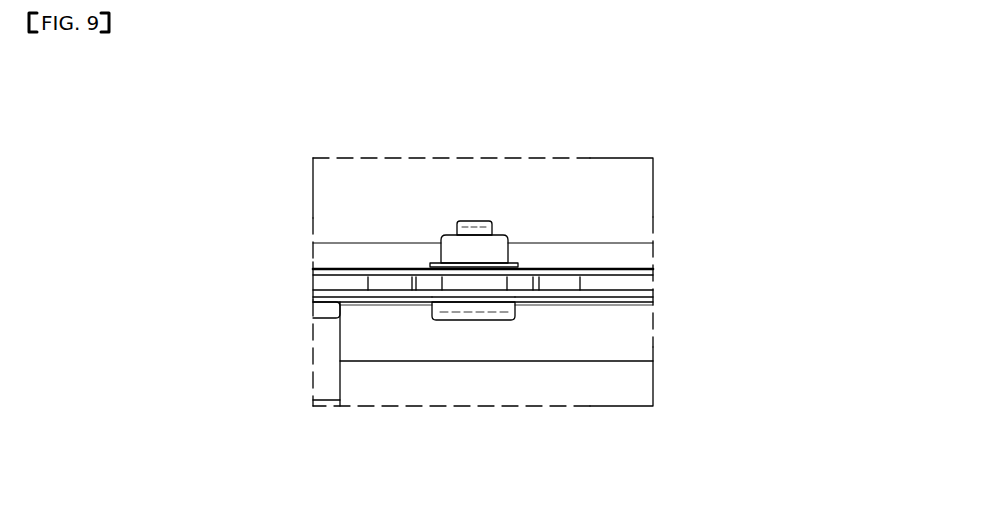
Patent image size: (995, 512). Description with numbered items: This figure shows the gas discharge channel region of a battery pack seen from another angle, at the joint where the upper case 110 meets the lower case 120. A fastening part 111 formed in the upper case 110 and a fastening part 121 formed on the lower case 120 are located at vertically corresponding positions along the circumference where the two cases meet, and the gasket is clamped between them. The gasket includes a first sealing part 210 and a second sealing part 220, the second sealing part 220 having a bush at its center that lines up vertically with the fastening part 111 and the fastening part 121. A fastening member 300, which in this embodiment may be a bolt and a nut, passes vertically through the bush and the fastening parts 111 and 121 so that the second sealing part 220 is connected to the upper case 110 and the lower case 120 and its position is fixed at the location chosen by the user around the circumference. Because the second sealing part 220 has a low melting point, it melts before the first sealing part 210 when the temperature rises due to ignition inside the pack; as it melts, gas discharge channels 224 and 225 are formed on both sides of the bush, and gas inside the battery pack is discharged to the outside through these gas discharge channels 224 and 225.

The upper case 110 is at (587, 187).
The fastening part 111 is at (477, 273).
The lower case 120 is at (619, 335).
The fastening part 121 is at (482, 293).
The first sealing part 210 is at (323, 283).
The second sealing part 220 is at (458, 284).
The gas discharge channel 224 is at (388, 280).
The gas discharge channel 225 is at (558, 280).
The fastening member 300 is at (502, 246).